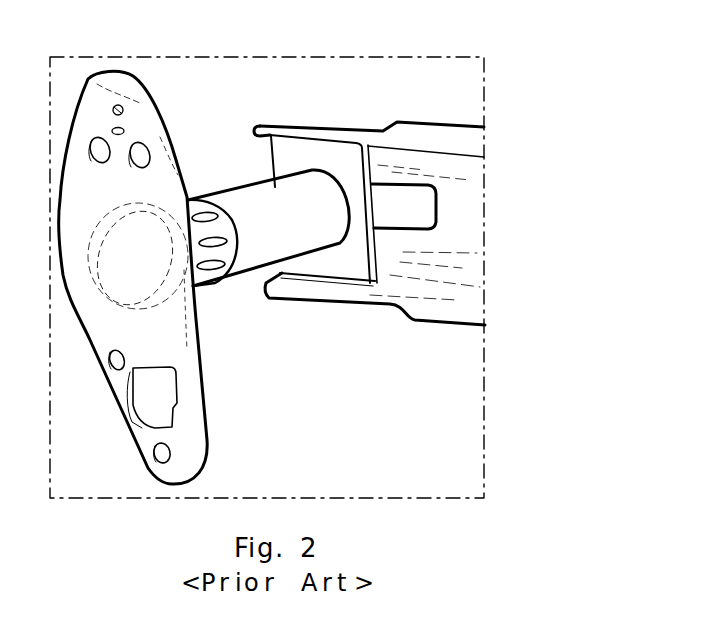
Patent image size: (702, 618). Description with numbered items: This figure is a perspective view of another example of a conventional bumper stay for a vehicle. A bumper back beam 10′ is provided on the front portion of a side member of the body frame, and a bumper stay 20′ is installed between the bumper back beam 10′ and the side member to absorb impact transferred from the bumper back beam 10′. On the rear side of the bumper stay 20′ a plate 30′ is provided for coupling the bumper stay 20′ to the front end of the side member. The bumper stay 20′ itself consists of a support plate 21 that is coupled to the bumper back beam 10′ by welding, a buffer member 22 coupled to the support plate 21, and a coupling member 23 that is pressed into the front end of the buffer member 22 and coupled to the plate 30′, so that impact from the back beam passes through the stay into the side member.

The bumper back beam 10′ is at (395, 203).
The bumper stay 20′ is at (268, 240).
The support plate 21 is at (322, 151).
The buffer member 22 is at (284, 276).
The coupling member 23 is at (209, 277).
The plate 30′ is at (125, 80).